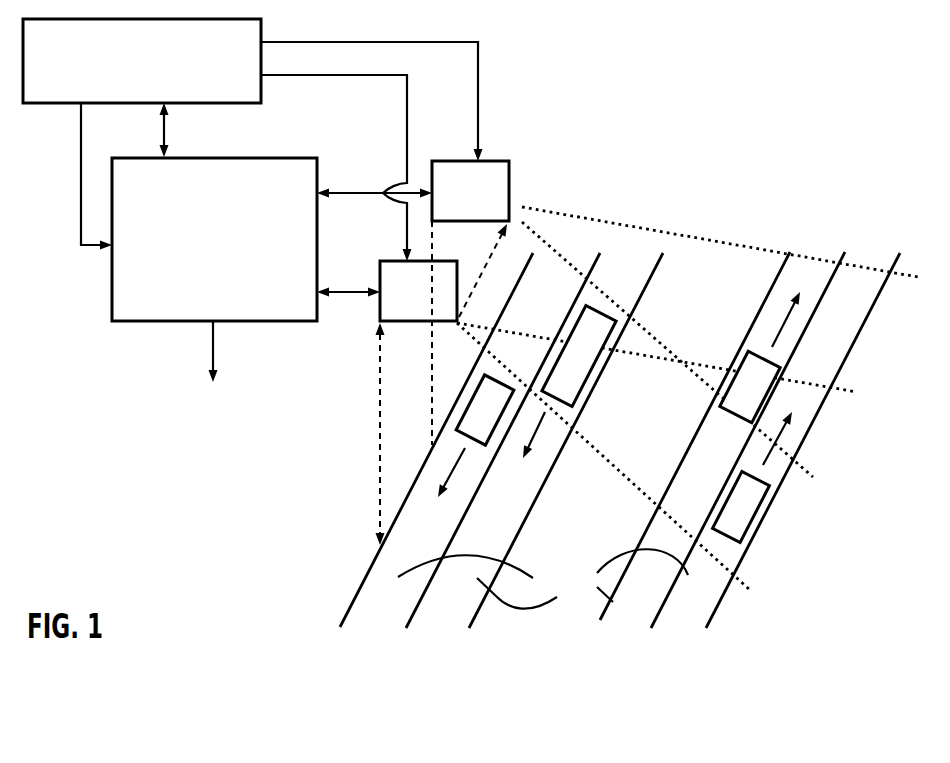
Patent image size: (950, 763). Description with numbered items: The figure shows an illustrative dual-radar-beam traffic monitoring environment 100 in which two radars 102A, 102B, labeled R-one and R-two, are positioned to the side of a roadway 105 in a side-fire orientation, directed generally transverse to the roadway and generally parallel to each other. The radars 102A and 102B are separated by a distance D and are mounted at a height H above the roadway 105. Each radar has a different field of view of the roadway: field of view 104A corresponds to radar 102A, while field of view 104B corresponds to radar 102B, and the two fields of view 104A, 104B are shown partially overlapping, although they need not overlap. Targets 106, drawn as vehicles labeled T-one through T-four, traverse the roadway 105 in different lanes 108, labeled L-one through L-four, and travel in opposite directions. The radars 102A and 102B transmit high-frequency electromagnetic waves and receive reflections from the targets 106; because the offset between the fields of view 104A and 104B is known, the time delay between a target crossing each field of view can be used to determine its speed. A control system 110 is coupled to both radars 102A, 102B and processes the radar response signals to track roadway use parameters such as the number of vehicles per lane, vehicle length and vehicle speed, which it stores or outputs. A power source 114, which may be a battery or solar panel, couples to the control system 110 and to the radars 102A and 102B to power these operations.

The dual-radar-beam traffic monitoring environment 100 is at (255, 519).
The radar 102A is at (378, 305).
The radar 102B is at (495, 157).
The field of view 104A is at (621, 468).
The field of view 104B is at (707, 243).
The roadway 105 is at (715, 657).
The targets 106 is at (491, 432).
The lanes 108 is at (543, 578).
The control system 110 is at (195, 263).
The power source 114 is at (162, 91).